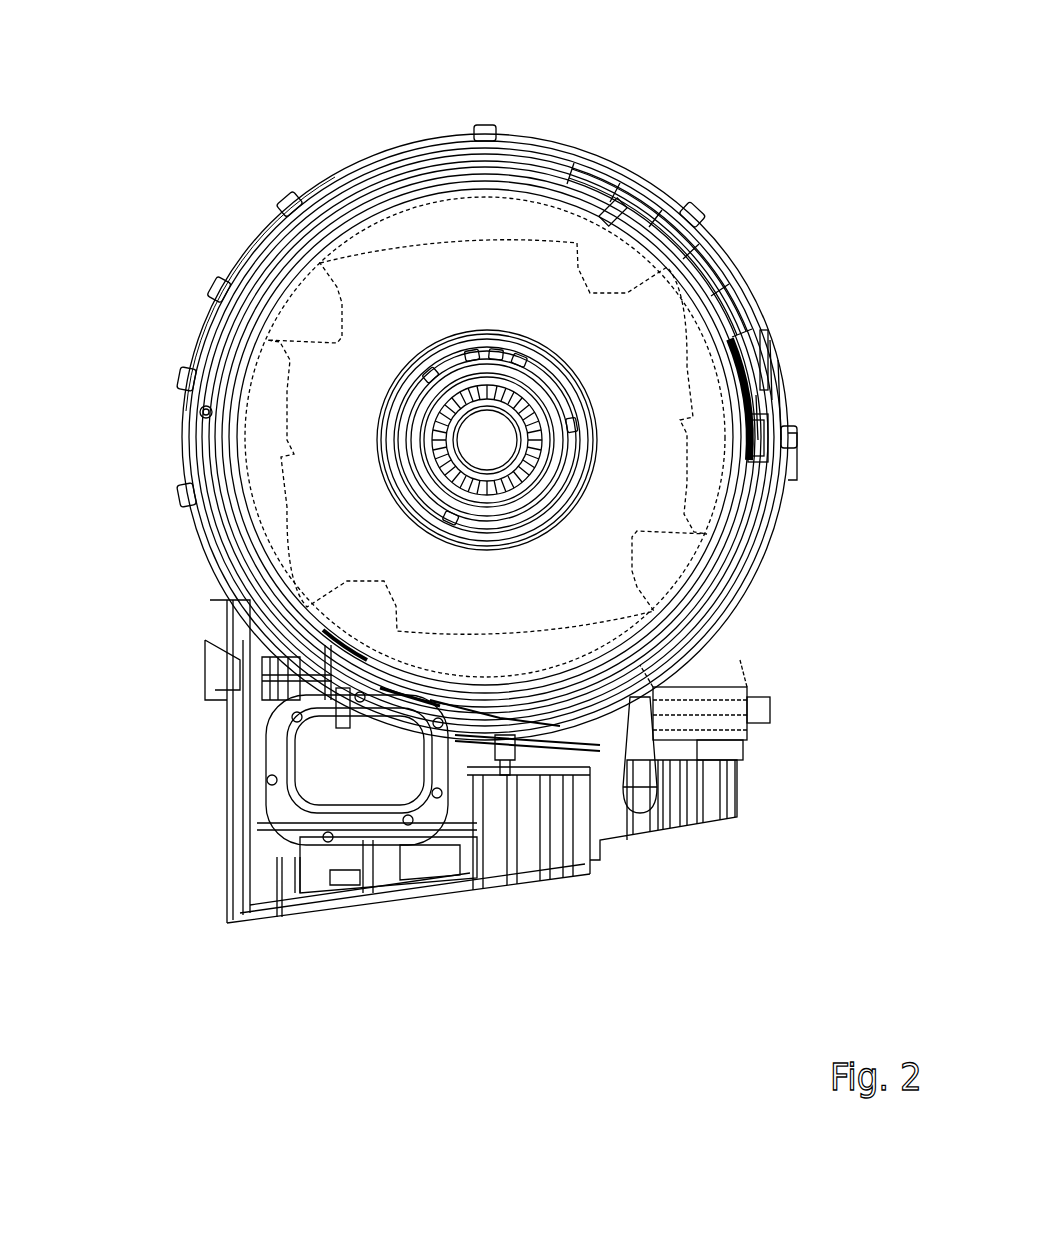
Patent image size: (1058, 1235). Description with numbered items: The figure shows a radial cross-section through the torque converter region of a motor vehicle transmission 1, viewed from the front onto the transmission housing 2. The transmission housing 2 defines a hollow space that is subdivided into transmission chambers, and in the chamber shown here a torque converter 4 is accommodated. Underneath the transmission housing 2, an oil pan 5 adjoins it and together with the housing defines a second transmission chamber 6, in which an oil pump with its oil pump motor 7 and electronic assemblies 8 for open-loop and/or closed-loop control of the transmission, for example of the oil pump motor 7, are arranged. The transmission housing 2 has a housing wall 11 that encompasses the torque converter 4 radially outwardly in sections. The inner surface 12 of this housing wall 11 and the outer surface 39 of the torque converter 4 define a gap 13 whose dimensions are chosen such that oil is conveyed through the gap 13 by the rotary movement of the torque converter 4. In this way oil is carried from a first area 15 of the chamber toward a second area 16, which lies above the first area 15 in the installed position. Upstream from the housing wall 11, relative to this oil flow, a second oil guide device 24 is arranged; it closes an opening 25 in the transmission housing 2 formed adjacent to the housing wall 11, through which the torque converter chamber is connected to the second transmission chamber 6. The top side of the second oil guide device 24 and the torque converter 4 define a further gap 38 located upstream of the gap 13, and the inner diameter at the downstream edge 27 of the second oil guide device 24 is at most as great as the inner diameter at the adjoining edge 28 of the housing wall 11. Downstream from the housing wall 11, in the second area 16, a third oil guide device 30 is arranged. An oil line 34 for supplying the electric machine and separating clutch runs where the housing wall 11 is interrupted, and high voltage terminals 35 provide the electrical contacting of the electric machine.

The motor vehicle transmission 1 is at (532, 100).
The transmission housing 2 is at (662, 181).
The torque converter 4 is at (470, 285).
The oil pan 5 is at (375, 924).
The second transmission chamber 6 is at (276, 830).
The oil pump motor 7 is at (406, 689).
The electronic assemblies 8 is at (276, 801).
The housing wall 11 is at (215, 495).
The inner surface 12 is at (358, 217).
The gap 13 is at (270, 273).
The first area 15 is at (503, 742).
The second area 16 is at (618, 182).
The second oil guide device 24 is at (433, 691).
The opening 25 is at (342, 692).
The downstream edge 27 is at (177, 668).
The adjoining edge 28 is at (322, 660).
The third oil guide device 30 is at (612, 216).
The oil line 34 is at (204, 411).
The high voltage terminals 35 is at (763, 437).
The gap 38 is at (492, 714).
The outer surface 39 is at (323, 226).